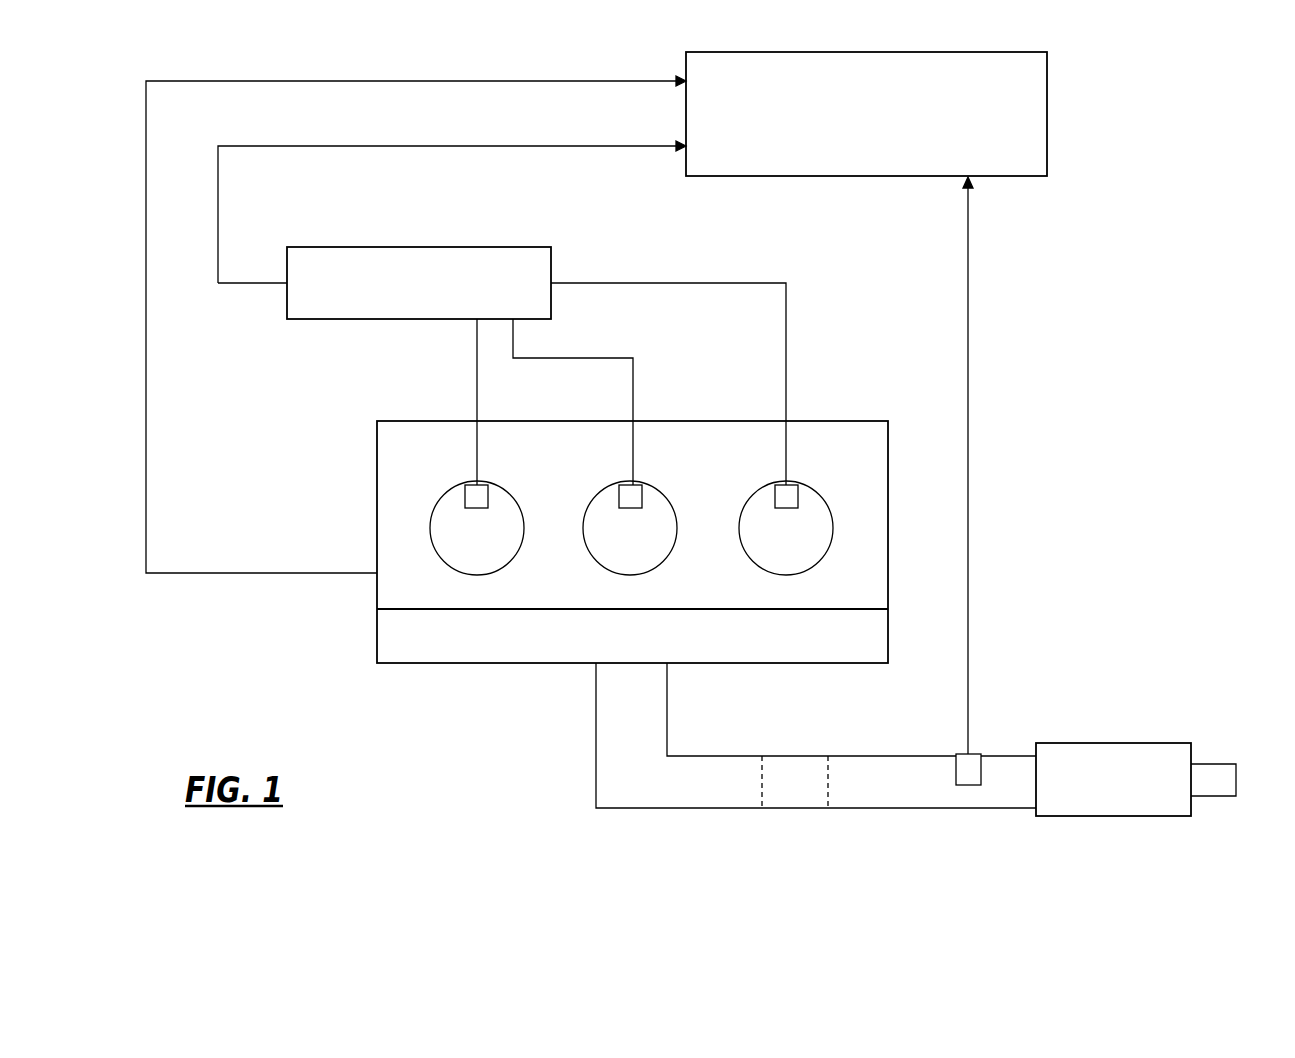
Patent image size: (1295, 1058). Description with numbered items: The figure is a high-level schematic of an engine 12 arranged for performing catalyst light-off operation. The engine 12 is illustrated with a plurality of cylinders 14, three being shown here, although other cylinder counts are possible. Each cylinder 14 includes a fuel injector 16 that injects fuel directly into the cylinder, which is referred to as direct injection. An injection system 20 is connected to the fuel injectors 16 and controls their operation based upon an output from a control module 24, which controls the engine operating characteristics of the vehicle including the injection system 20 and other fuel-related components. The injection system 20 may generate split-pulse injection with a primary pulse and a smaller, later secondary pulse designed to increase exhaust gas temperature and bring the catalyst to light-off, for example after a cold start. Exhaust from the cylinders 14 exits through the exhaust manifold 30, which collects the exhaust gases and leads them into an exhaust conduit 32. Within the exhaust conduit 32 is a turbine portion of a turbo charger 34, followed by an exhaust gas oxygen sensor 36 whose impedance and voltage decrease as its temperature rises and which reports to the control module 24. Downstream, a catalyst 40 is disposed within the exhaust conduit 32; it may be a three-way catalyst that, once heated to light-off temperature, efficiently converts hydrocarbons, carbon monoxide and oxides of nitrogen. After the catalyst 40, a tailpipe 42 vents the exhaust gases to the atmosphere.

The engine 12 is at (888, 548).
The cylinder 14 is at (434, 510).
The fuel injector 16 is at (484, 490).
The injection system 20 is at (331, 247).
The control module 24 is at (864, 52).
The exhaust manifold 30 is at (888, 637).
The exhaust conduit 32 is at (891, 756).
The turbo charger 34 is at (797, 756).
The exhaust gas oxygen sensor 36 is at (973, 754).
The catalyst 40 is at (1114, 743).
The tailpipe 42 is at (1212, 764).